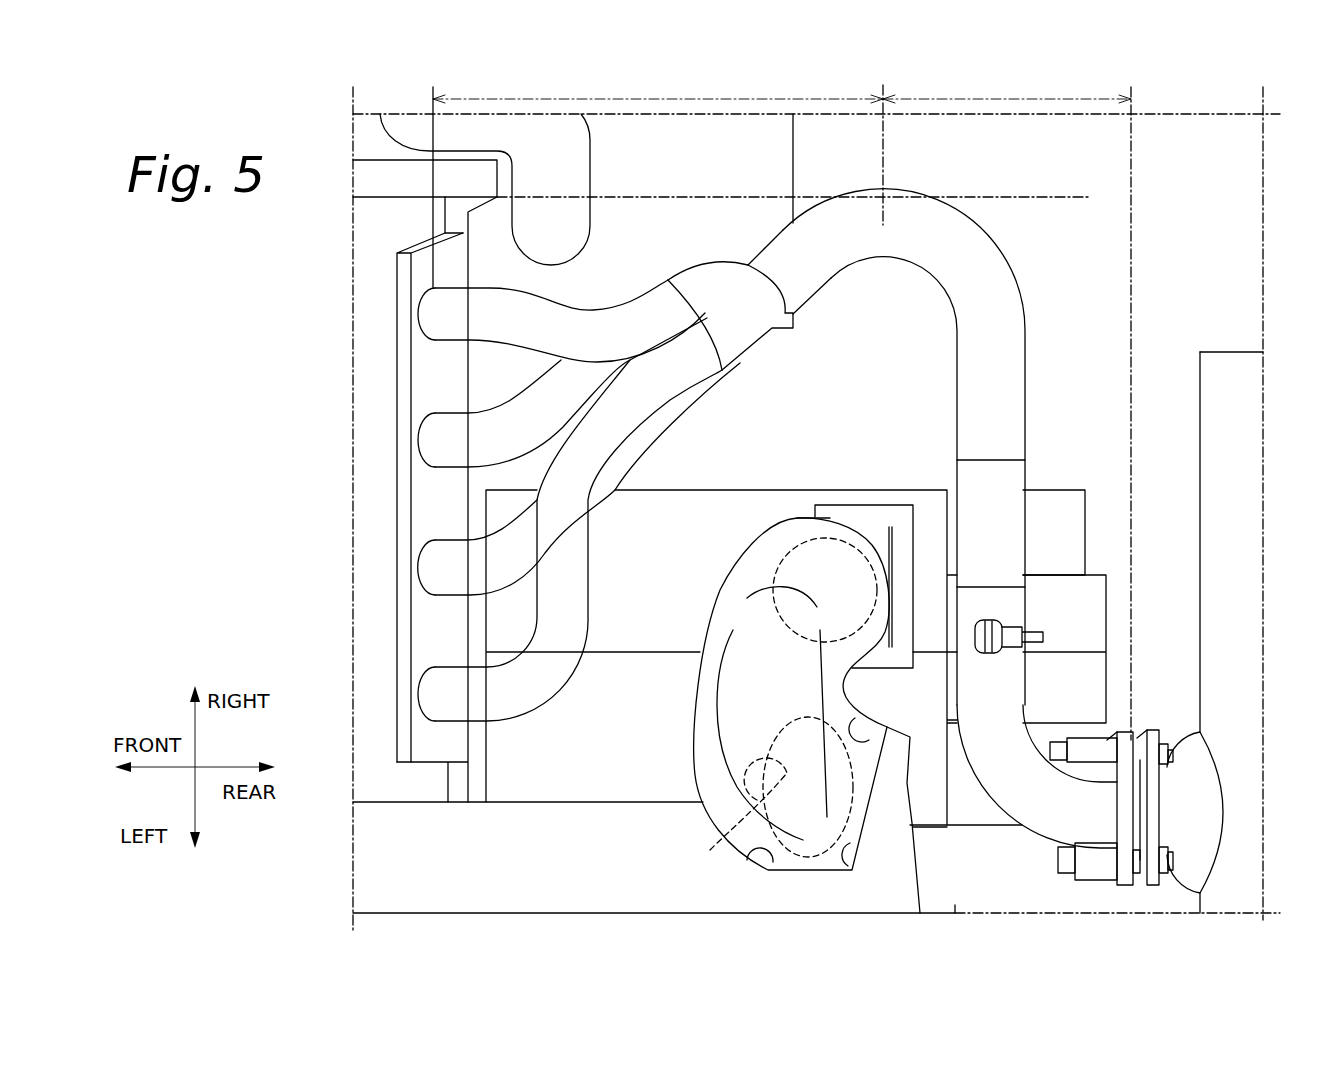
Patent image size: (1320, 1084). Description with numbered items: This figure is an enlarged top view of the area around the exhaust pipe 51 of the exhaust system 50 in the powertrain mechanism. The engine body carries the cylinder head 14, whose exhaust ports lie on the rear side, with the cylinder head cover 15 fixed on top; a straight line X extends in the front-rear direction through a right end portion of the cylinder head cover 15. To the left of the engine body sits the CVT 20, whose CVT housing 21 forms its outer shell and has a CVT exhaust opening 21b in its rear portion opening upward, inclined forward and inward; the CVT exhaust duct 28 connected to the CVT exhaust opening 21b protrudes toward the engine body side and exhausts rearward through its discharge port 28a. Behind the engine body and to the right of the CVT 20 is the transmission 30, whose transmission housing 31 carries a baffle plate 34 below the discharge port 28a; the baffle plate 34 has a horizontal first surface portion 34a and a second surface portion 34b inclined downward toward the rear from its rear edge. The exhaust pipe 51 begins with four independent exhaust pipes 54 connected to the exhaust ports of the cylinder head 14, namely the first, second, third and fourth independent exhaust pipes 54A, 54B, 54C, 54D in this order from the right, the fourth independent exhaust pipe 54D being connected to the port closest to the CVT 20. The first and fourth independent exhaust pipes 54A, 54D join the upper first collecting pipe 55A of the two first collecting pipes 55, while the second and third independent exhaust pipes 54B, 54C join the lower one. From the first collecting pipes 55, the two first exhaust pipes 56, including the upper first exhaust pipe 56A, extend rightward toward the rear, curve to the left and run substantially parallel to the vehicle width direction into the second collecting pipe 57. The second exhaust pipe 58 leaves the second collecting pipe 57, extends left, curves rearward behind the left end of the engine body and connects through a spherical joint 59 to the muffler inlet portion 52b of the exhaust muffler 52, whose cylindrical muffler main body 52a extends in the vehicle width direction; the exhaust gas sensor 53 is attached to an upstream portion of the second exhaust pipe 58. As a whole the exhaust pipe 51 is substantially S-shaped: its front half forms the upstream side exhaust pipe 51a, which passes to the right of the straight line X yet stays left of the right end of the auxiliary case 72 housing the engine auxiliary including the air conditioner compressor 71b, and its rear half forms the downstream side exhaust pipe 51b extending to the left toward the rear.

The cylinder head 14 is at (380, 170).
The cylinder head cover 15 is at (372, 237).
The CVT 20 is at (912, 853).
The CVT housing 21 is at (566, 883).
The CVT exhaust opening 21b is at (737, 828).
The CVT exhaust duct 28 is at (791, 660).
The discharge port 28a is at (790, 517).
The transmission 30 is at (1065, 490).
The transmission housing 31 is at (661, 608).
The baffle plate 34 is at (875, 529).
The first surface portion 34a is at (858, 523).
The second surface portion 34b is at (912, 547).
The exhaust system 50 is at (1143, 238).
The exhaust pipe 51 is at (1016, 253).
The upstream side exhaust pipe 51a is at (658, 87).
The downstream side exhaust pipe 51b is at (1007, 87).
The exhaust muffler 52 is at (1207, 578).
The muffler main body 52a is at (1238, 461).
The muffler inlet portion 52b is at (1187, 777).
The exhaust gas sensor 53 is at (1008, 618).
The independent exhaust pipes 54 is at (508, 497).
The first independent exhaust pipe 54A is at (425, 313).
The second independent exhaust pipe 54B is at (425, 440).
The third independent exhaust pipe 54C is at (425, 567).
The fourth independent exhaust pipe 54D is at (425, 694).
The first collecting pipes 55 is at (756, 361).
The upper first collecting pipe 55A is at (747, 337).
The first exhaust pipes 56 is at (829, 300).
The upper first exhaust pipe 56A is at (833, 262).
The second collecting pipe 57 is at (976, 538).
The second exhaust pipe 58 is at (991, 761).
The spherical joint 59 is at (1131, 737).
The air conditioner compressor 71b is at (530, 241).
The auxiliary case 72 is at (855, 141).
The straight line X is at (1053, 197).